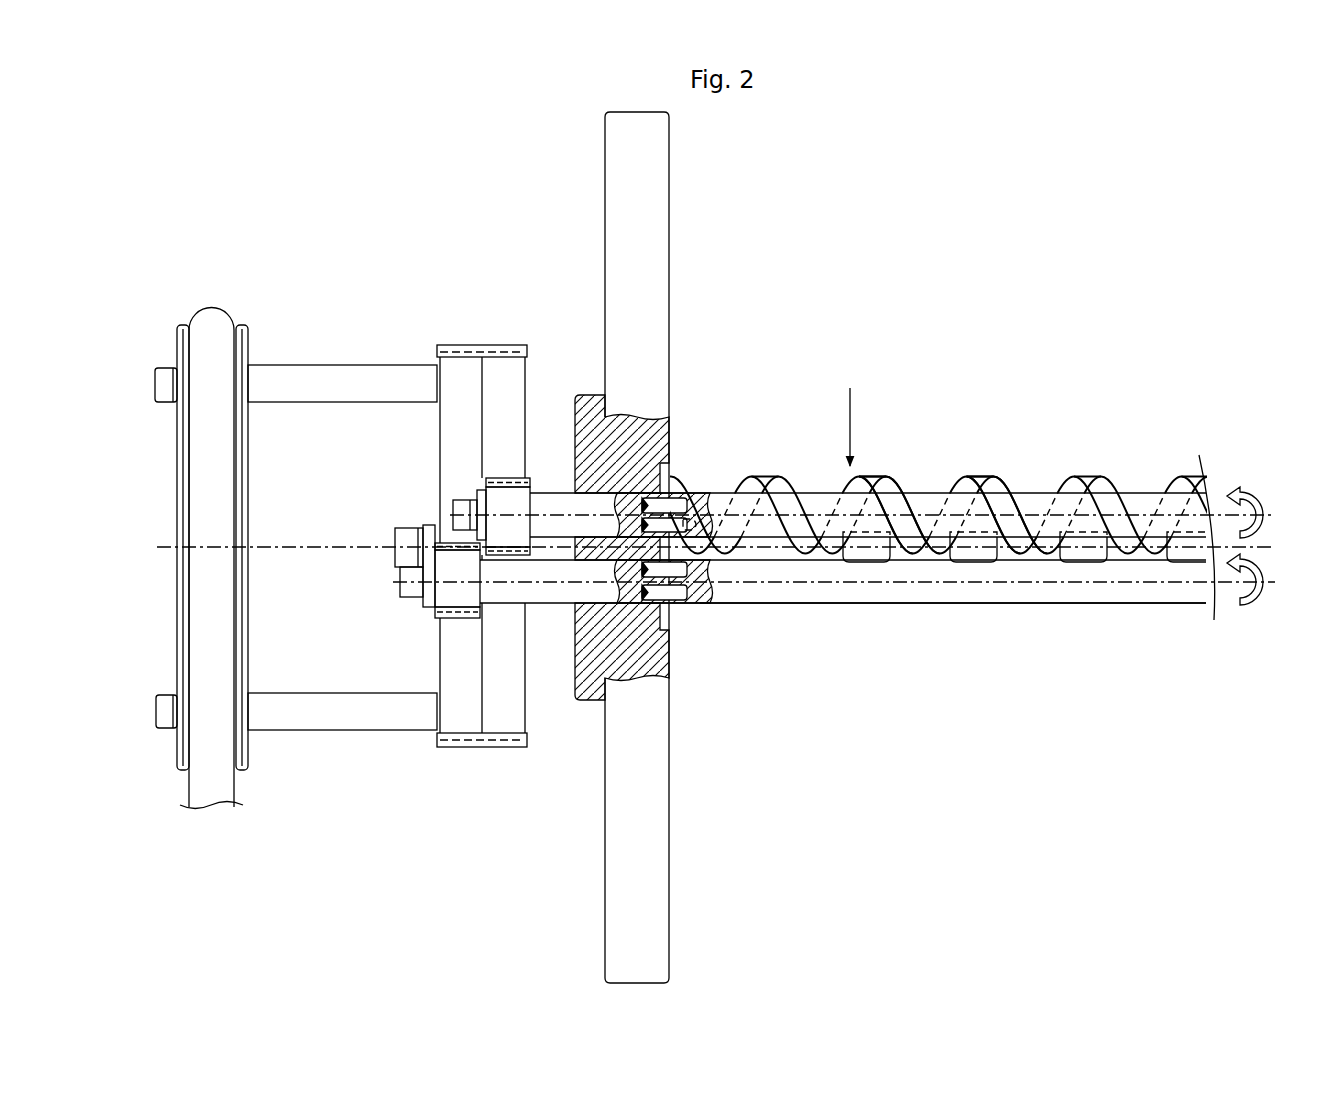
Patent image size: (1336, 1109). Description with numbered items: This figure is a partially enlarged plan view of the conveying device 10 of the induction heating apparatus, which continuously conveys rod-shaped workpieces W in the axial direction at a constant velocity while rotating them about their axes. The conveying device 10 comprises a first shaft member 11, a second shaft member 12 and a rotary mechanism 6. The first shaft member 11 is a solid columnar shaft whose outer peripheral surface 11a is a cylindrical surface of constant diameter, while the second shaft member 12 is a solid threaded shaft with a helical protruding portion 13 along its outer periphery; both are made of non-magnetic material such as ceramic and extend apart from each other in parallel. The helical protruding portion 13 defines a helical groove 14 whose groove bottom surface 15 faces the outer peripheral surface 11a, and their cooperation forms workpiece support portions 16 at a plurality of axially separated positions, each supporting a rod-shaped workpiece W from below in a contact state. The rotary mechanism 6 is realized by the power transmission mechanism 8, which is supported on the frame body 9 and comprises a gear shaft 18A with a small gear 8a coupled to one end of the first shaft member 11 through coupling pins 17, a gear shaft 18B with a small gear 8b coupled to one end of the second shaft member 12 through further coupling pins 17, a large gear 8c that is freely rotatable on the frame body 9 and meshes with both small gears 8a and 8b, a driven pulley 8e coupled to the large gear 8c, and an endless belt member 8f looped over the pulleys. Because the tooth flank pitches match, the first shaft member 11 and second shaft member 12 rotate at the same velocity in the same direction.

The rotary mechanism 6 is at (330, 505).
The power transmission mechanism 8 is at (266, 344).
The small gear 8a is at (455, 615).
The small gear 8b is at (504, 478).
The large gear 8c is at (470, 343).
The driven pulley 8e is at (180, 487).
The endless belt member 8f is at (220, 310).
The frame body 9 is at (677, 169).
The conveying device 10 is at (834, 505).
The first shaft member 11 is at (802, 613).
The outer peripheral surface 11a is at (853, 591).
The second shaft member 12 is at (1051, 465).
The helical protruding portion 13 is at (992, 478).
The helical groove 14 is at (920, 489).
The groove bottom surface 15 is at (946, 503).
The workpiece support portion 16 is at (894, 562).
The coupling pin 17 is at (666, 497).
The gear shaft 18A is at (552, 600).
The gear shaft 18B is at (552, 500).
The rod-shaped workpiece W is at (976, 566).